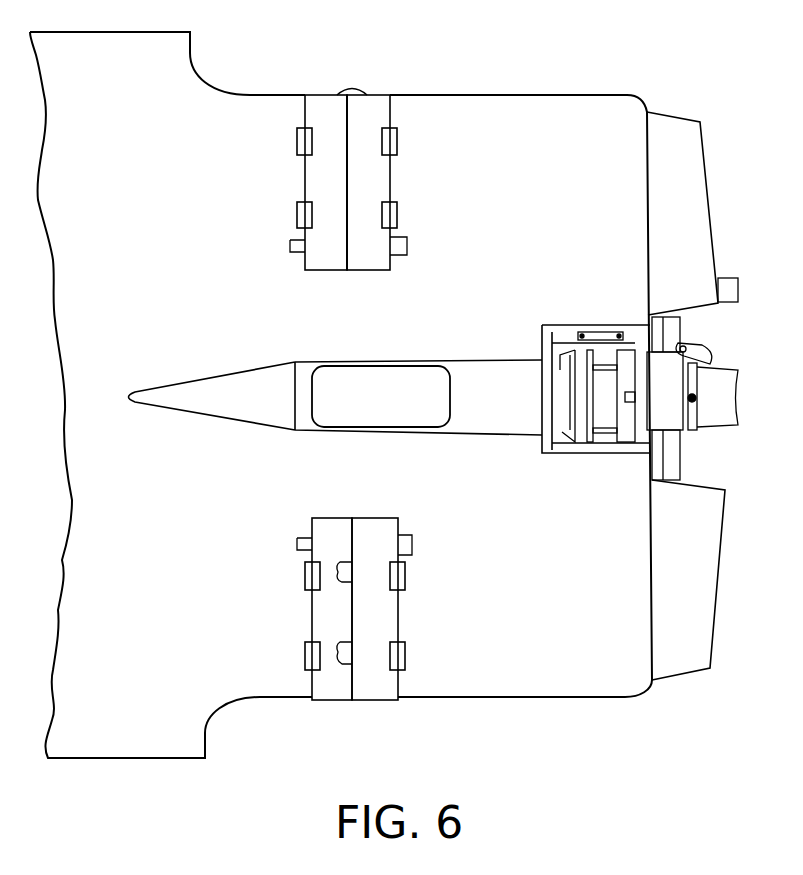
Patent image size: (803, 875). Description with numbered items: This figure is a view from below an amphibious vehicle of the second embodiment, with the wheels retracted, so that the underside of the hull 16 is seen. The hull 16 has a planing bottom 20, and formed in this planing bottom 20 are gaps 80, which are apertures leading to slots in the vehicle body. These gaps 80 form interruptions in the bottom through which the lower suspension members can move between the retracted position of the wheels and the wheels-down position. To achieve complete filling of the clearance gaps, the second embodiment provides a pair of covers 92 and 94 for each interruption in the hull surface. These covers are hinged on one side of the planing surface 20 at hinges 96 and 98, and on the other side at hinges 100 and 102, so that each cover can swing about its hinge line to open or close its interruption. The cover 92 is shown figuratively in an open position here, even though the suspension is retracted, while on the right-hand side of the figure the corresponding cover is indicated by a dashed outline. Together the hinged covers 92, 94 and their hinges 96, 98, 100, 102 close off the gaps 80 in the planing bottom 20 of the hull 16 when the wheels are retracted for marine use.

The hull 16 is at (560, 95).
The planing bottom 20 is at (540, 237).
The gaps 80 is at (352, 78).
The cover 92 is at (305, 112).
The cover 94 is at (390, 112).
The hinge 96 is at (297, 143).
The hinge 98 is at (397, 143).
The hinge 100 is at (305, 575).
The hinge 102 is at (405, 575).